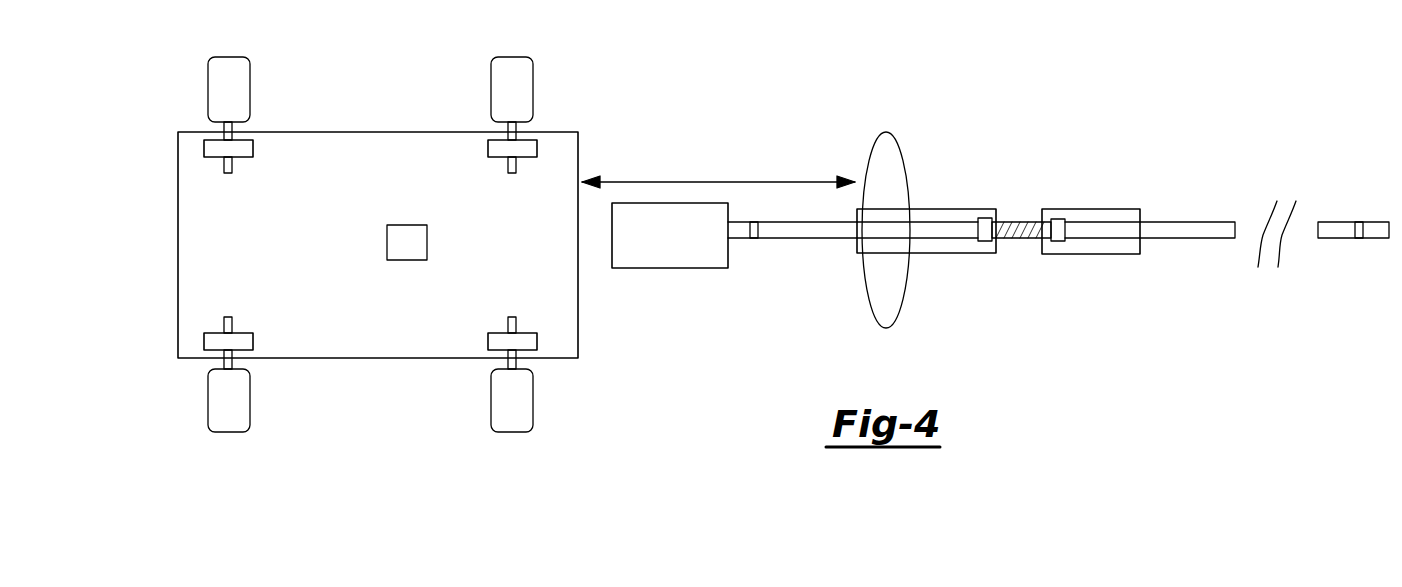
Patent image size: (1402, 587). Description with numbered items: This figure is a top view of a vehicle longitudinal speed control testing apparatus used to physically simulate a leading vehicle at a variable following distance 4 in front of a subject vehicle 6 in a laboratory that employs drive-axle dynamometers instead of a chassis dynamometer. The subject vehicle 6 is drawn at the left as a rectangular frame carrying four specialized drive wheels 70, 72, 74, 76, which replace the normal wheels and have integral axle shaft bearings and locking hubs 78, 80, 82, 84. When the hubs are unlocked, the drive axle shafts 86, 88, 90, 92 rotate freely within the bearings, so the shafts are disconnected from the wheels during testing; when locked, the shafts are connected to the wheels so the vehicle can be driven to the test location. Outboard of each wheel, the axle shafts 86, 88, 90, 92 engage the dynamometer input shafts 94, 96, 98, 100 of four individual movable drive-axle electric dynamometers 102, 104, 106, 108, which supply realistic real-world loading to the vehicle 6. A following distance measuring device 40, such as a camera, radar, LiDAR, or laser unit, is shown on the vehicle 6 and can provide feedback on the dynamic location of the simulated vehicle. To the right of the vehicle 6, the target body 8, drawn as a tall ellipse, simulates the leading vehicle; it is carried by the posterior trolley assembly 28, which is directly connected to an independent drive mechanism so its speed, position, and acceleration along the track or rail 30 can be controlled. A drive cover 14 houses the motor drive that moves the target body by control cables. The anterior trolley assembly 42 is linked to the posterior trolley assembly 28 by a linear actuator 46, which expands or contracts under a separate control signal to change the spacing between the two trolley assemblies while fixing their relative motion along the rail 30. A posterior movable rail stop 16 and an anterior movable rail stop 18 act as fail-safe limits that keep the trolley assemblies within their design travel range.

The following distance 4 is at (709, 182).
The subject vehicle 6 is at (374, 358).
The target body 8 is at (892, 298).
The drive cover 14 is at (672, 248).
The posterior movable rail stop 16 is at (754, 238).
The anterior movable rail stop 18 is at (1359, 238).
The posterior trolley assembly 28 is at (967, 253).
The track or rail 30 is at (810, 238).
The following distance measuring device 40 is at (387, 241).
The anterior trolley assembly 42 is at (1110, 254).
The linear actuator 46 is at (1018, 222).
The specialized drive wheel 70 is at (533, 140).
The specialized drive wheel 72 is at (533, 350).
The specialized drive wheel 74 is at (250, 350).
The specialized drive wheel 76 is at (250, 140).
The locking hub 78 is at (505, 157).
The locking hub 80 is at (506, 333).
The locking hub 82 is at (222, 333).
The locking hub 84 is at (222, 157).
The drive axle shaft 86 is at (520, 165).
The drive axle shaft 88 is at (520, 322).
The drive axle shaft 90 is at (238, 322).
The drive axle shaft 92 is at (238, 165).
The dynamometer input shaft 94 is at (506, 127).
The dynamometer input shaft 96 is at (506, 363).
The dynamometer input shaft 98 is at (222, 363).
The dynamometer input shaft 100 is at (222, 127).
The drive-axle electric dynamometer 102 is at (521, 94).
The drive-axle electric dynamometer 104 is at (521, 396).
The drive-axle electric dynamometer 106 is at (238, 396).
The drive-axle electric dynamometer 108 is at (238, 94).